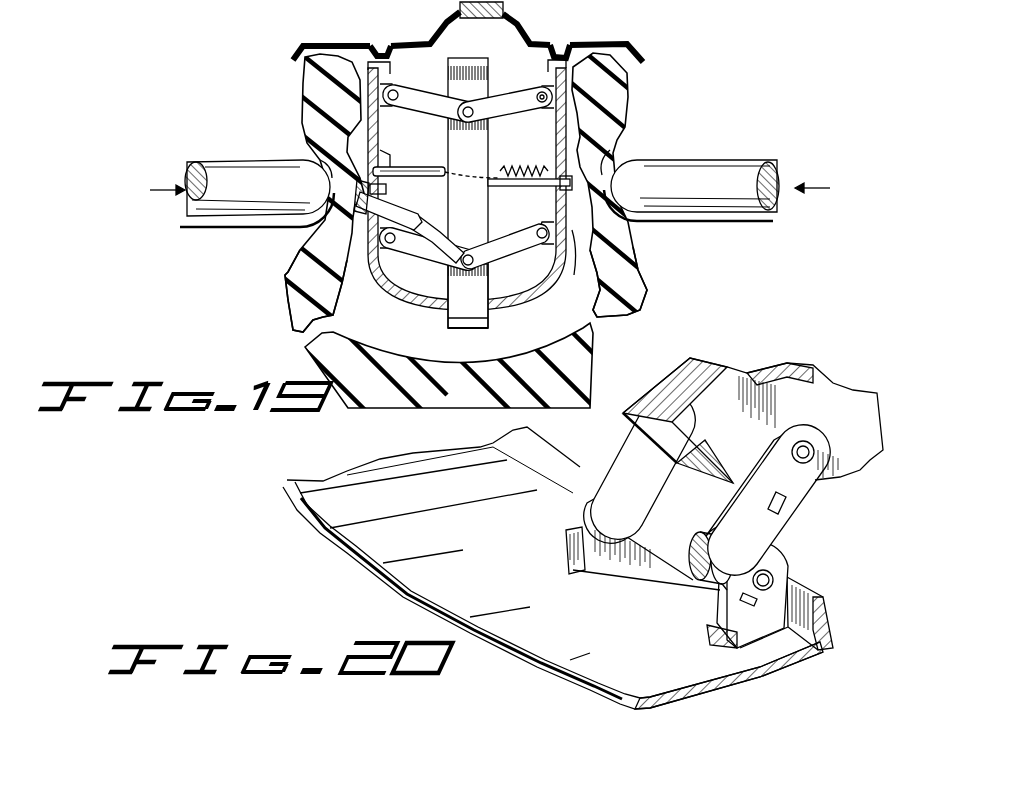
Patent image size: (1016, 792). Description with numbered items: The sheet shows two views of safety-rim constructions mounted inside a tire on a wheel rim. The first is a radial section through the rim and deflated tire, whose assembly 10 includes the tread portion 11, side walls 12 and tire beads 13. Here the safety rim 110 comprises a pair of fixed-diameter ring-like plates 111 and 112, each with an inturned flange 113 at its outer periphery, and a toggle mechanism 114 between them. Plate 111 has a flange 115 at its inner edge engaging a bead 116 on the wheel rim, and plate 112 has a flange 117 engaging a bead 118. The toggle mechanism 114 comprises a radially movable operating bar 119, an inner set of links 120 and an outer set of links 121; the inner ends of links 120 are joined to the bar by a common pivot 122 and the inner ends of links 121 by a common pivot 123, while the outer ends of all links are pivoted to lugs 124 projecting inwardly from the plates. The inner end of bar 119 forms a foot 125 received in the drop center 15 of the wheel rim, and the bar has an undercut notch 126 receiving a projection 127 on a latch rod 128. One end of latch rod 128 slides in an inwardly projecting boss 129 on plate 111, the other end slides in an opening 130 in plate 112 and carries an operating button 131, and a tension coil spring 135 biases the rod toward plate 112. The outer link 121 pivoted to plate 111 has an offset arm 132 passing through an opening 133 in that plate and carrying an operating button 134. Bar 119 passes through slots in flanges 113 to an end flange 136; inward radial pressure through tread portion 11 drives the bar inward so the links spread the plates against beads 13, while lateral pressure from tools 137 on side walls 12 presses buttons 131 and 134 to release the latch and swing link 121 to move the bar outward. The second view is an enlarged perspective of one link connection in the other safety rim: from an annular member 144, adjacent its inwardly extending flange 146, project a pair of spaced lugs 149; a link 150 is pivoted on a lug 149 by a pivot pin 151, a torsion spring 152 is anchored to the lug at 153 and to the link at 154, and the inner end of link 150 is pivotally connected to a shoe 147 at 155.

In FIG. 19, the seat assembly 10 is at (648, 330).
In FIG. 19, the tread portion 11 is at (470, 401).
In FIG. 19, the side walls 12 is at (288, 285).
In FIG. 19, the tire beads 13 is at (645, 90).
In FIG. 19, the drop center 15 is at (458, 14).
In FIG. 19, the safety rim 110 is at (398, 313).
In FIG. 19, the ring-like plate 111 is at (385, 133).
In FIG. 19, the ring-like plate 112 is at (547, 173).
In FIG. 19, the inturned flange 113 is at (420, 312).
In FIG. 19, the toggle mechanism 114 is at (494, 84).
In FIG. 19, the flange 115 is at (386, 58).
In FIG. 19, the bead 116 is at (384, 44).
In FIG. 19, the flange 117 is at (570, 50).
In FIG. 19, the bead 118 is at (556, 56).
In FIG. 19, the operating bar 119 is at (535, 262).
In FIG. 19, the inner set of links 120 is at (516, 107).
In FIG. 19, the outer set of links 121 is at (442, 272).
In FIG. 19, the common pivot 122 is at (465, 106).
In FIG. 19, the common pivot 123 is at (468, 296).
In FIG. 19, the lugs 124 is at (548, 110).
In FIG. 19, the foot 125 is at (480, 47).
In FIG. 19, the undercut notch 126 is at (492, 242).
In FIG. 19, the projection 127 is at (432, 170).
In FIG. 19, the latch rod 128 is at (537, 212).
In FIG. 19, the boss 129 is at (396, 190).
In FIG. 19, the opening 130 is at (583, 265).
In FIG. 19, the operating button 131 is at (622, 135).
In FIG. 19, the offset arm 132 is at (448, 225).
In FIG. 19, the opening 133 is at (368, 225).
In FIG. 19, the operating button 134 is at (320, 142).
In FIG. 19, the tension coil spring 135 is at (537, 186).
In FIG. 19, the end flange 136 is at (470, 332).
In FIG. 19, the pressure tools 137 is at (748, 160).
In FIG. 20, the annular member 144 is at (712, 680).
In FIG. 20, the inwardly extending flange 146 is at (828, 612).
In FIG. 20, the shoe 147 is at (828, 385).
In FIG. 20, the lugs 149 is at (568, 540).
In FIG. 20, the link 150 is at (618, 452).
In FIG. 20, the pivot pin 151 is at (630, 507).
In FIG. 20, the torsion spring 152 is at (720, 600).
In FIG. 20, the spring anchor on lug 153 is at (752, 605).
In FIG. 20, the spring anchor on link 154 is at (802, 500).
In FIG. 20, the pivotal connection 155 is at (812, 446).